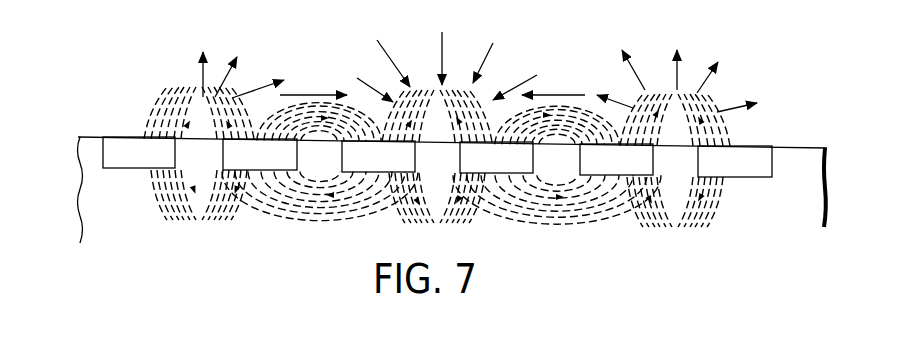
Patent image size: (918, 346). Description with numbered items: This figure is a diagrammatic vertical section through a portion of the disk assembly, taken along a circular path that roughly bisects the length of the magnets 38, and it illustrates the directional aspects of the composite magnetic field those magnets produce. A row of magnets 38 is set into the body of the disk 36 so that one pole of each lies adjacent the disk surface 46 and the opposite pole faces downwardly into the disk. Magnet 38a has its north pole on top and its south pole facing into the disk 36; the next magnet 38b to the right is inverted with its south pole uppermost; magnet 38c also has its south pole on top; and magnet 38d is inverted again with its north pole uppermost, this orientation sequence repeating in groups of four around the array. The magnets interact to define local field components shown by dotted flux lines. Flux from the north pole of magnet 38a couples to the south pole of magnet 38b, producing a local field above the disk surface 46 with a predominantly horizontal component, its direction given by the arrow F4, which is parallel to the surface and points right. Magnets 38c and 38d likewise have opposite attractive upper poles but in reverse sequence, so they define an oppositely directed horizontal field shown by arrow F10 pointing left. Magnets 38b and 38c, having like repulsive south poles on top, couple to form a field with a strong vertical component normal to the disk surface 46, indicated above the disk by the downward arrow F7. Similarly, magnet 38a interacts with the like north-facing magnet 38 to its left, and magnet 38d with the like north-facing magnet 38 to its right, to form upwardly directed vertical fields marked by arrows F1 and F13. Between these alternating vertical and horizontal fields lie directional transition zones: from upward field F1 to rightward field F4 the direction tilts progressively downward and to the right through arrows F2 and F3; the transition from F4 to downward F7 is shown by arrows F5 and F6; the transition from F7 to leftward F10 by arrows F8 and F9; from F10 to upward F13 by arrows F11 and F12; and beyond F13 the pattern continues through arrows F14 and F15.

The disk 36 is at (98, 156).
The magnets 38 is at (145, 164).
The magnet 38a is at (233, 162).
The magnet 38b is at (396, 165).
The magnet 38c is at (510, 165).
The magnet 38d is at (630, 165).
The disk surface 46 is at (99, 137).
The field direction arrow F1 is at (211, 60).
The field direction arrow F2 is at (235, 68).
The field direction arrow F3 is at (267, 78).
The field direction arrow F4 is at (313, 86).
The field direction arrow F5 is at (371, 79).
The field direction arrow F6 is at (389, 50).
The field direction arrow F7 is at (444, 44).
The field direction arrow F8 is at (495, 51).
The field direction arrow F9 is at (524, 77).
The field direction arrow F10 is at (553, 85).
The field direction arrow F11 is at (610, 90).
The field direction arrow F12 is at (632, 52).
The field direction arrow F13 is at (685, 52).
The field direction arrow F14 is at (723, 64).
The field direction arrow F15 is at (752, 98).